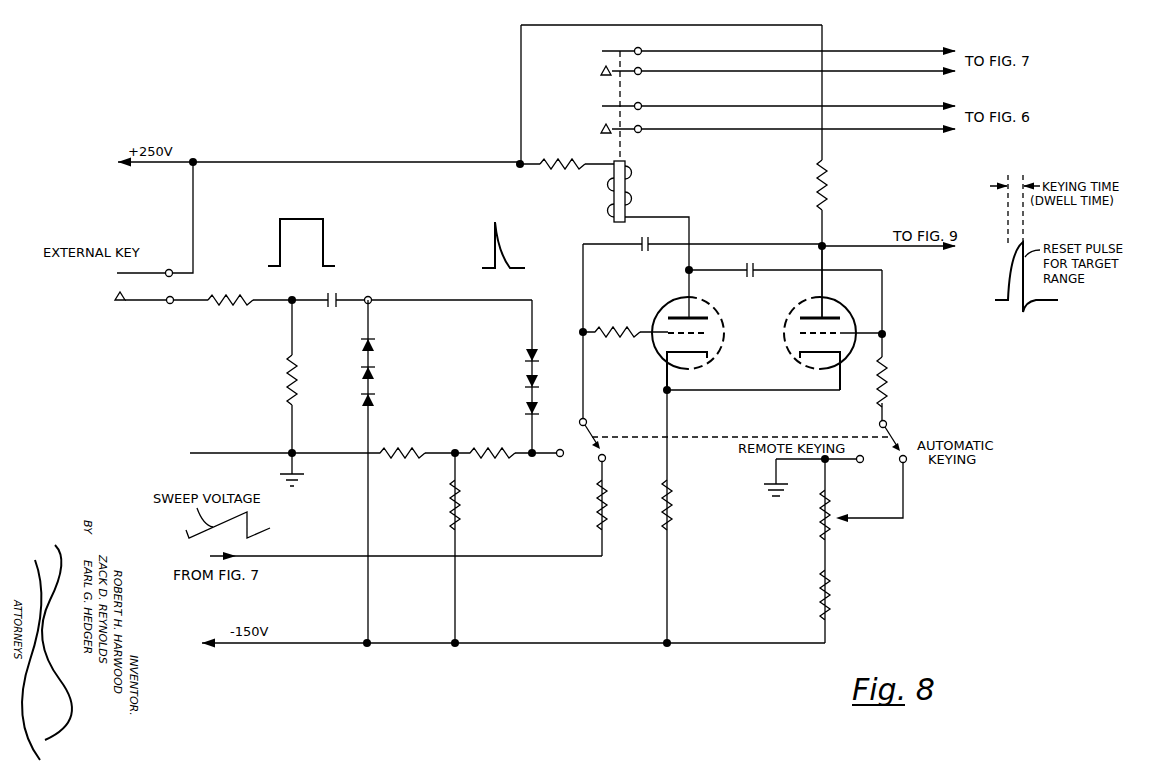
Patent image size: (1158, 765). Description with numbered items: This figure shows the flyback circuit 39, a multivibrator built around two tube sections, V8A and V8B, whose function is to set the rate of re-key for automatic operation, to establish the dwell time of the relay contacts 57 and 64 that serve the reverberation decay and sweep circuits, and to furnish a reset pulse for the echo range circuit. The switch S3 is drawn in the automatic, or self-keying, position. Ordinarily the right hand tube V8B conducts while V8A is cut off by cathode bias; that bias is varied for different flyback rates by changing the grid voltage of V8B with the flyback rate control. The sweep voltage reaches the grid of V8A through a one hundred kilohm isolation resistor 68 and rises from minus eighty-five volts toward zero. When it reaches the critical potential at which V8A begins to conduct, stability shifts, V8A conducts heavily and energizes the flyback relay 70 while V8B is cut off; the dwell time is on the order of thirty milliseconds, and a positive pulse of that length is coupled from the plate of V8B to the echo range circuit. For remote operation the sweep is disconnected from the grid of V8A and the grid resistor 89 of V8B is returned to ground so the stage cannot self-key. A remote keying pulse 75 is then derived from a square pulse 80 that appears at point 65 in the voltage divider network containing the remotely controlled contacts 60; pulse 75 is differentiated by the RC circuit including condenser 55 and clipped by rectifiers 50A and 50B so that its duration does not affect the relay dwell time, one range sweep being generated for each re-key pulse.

The relay contacts 64 is at (604, 67).
The relay contacts 57 is at (604, 129).
The flyback relay 70 is at (608, 191).
The square pulse 80 is at (323, 241).
The remote keying pulse 75 is at (505, 246).
The remotely controlled contacts 60 is at (118, 286).
The point in voltage divider network 65 is at (290, 308).
The condenser 55 is at (330, 310).
The rectifier 50A is at (378, 353).
The rectifier 50B is at (526, 382).
The isolation resistor 68 is at (616, 326).
The left hand tube V8A is at (714, 311).
The right hand tube V8B is at (791, 356).
The switch S3 is at (712, 436).
The grid resistor 89 is at (889, 378).
The flyback circuit 39 is at (940, 561).